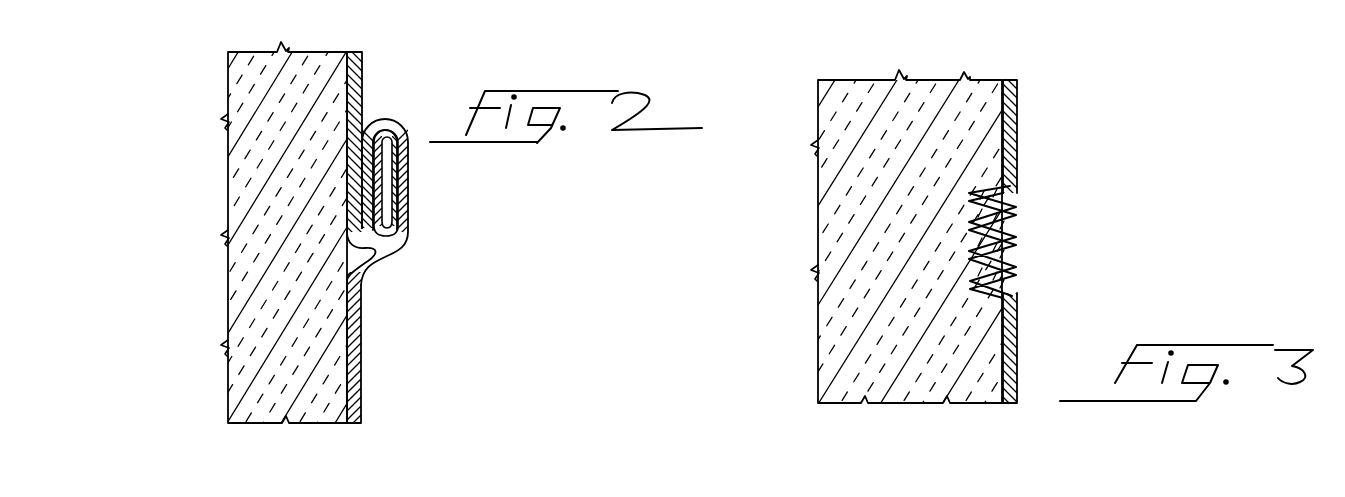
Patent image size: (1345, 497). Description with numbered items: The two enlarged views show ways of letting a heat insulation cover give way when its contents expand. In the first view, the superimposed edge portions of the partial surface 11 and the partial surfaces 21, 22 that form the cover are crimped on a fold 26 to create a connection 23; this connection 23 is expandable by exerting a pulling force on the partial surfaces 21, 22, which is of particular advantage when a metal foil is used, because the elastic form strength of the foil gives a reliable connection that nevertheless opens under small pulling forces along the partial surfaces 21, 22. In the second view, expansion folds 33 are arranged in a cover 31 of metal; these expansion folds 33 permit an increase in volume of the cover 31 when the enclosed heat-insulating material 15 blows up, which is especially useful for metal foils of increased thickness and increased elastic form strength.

In FIG. 3, the partial surface 11 is at (1021, 0).
In FIG. 2, the heat-insulating material 15 is at (228, 243).
In FIG. 3, the heat-insulating material 15 is at (835, 247).
In FIG. 2, the partial surface 21 is at (362, 340).
In FIG. 2, the partial surface 22 is at (363, 90).
In FIG. 2, the connection 23 is at (408, 226).
In FIG. 2, the fold 26 is at (346, 143).
In FIG. 3, the cover 31 is at (1018, 330).
In FIG. 3, the expansion folds 33 is at (1012, 243).